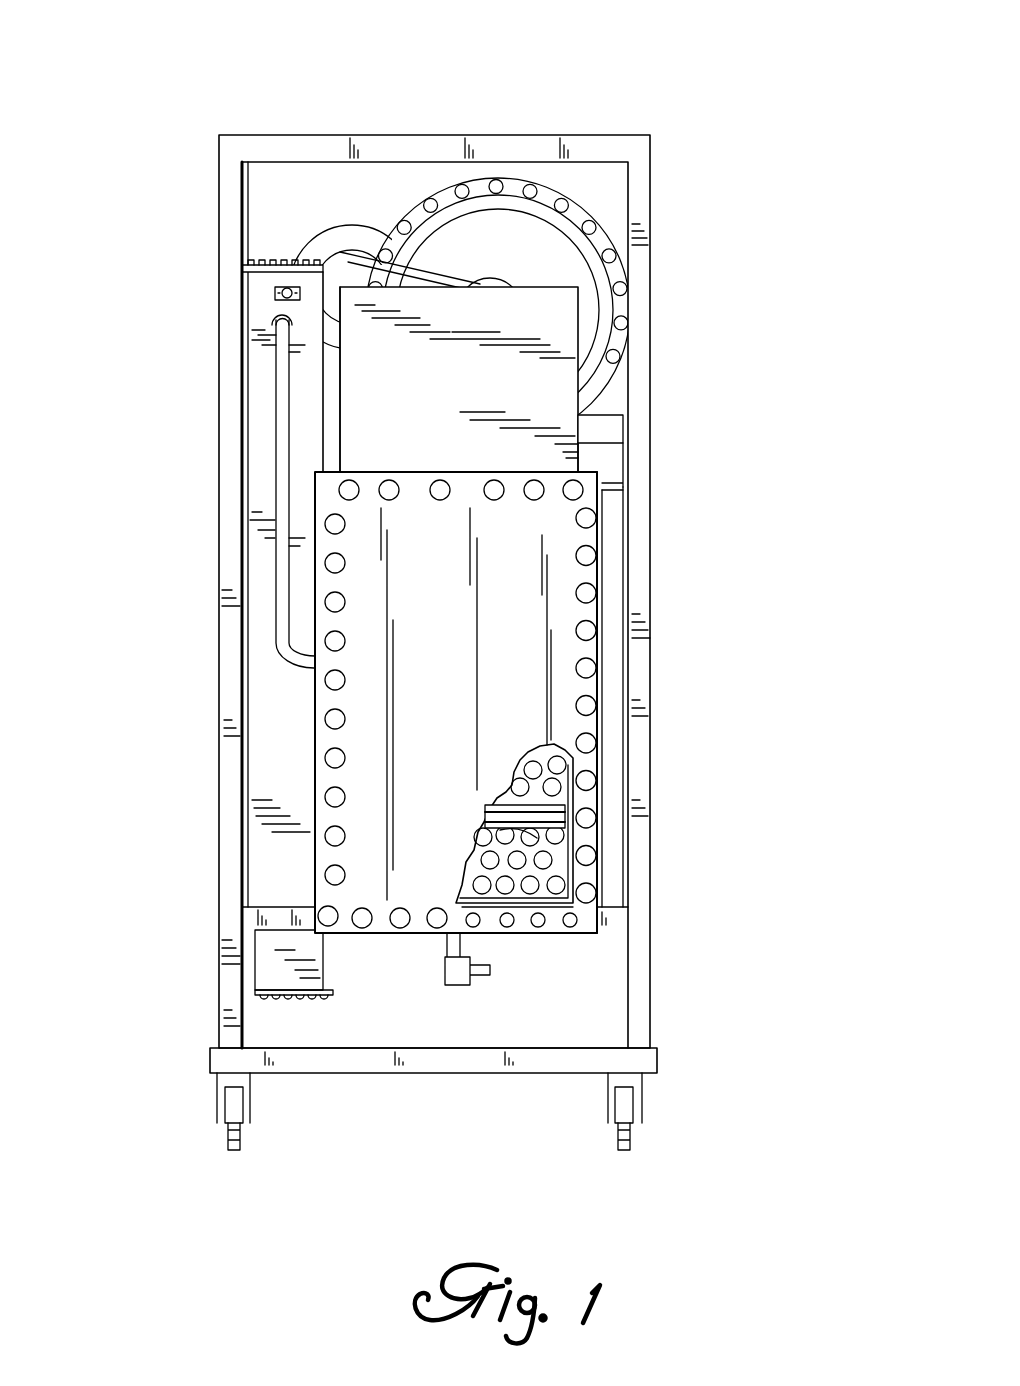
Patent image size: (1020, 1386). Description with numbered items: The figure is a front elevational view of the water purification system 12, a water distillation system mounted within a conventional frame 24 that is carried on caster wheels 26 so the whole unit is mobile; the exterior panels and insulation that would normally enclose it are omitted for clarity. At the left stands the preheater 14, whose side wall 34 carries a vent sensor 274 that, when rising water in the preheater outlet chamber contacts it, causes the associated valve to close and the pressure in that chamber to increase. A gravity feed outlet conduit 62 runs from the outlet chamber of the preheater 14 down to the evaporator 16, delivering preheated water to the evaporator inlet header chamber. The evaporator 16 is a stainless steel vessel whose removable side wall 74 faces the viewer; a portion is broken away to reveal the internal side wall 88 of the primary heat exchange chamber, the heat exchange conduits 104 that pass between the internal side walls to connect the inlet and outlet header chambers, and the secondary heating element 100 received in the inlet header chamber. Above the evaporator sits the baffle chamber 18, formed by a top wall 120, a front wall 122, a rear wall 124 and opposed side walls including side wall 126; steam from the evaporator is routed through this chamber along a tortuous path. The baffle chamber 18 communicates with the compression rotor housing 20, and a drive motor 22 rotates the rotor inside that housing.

The water purification system 12 is at (674, 88).
The preheater 14 is at (298, 718).
The evaporator 16 is at (560, 692).
The baffle chamber 18 is at (567, 385).
The compression rotor housing 20 is at (606, 216).
The drive motor 22 is at (368, 226).
The frame 24 is at (332, 133).
The caster wheels 26 is at (245, 1110).
The side wall 34 is at (262, 833).
The gravity feed outlet conduit 62 is at (276, 437).
The side wall 74 is at (590, 723).
The internal side wall 88 is at (560, 862).
The secondary heating element 100 is at (537, 838).
The heat exchange conduits 104 is at (556, 790).
The top wall 120 is at (523, 285).
The front wall 122 is at (585, 316).
The rear wall 124 is at (330, 400).
The side wall 126 is at (567, 458).
The vent sensor 274 is at (272, 292).